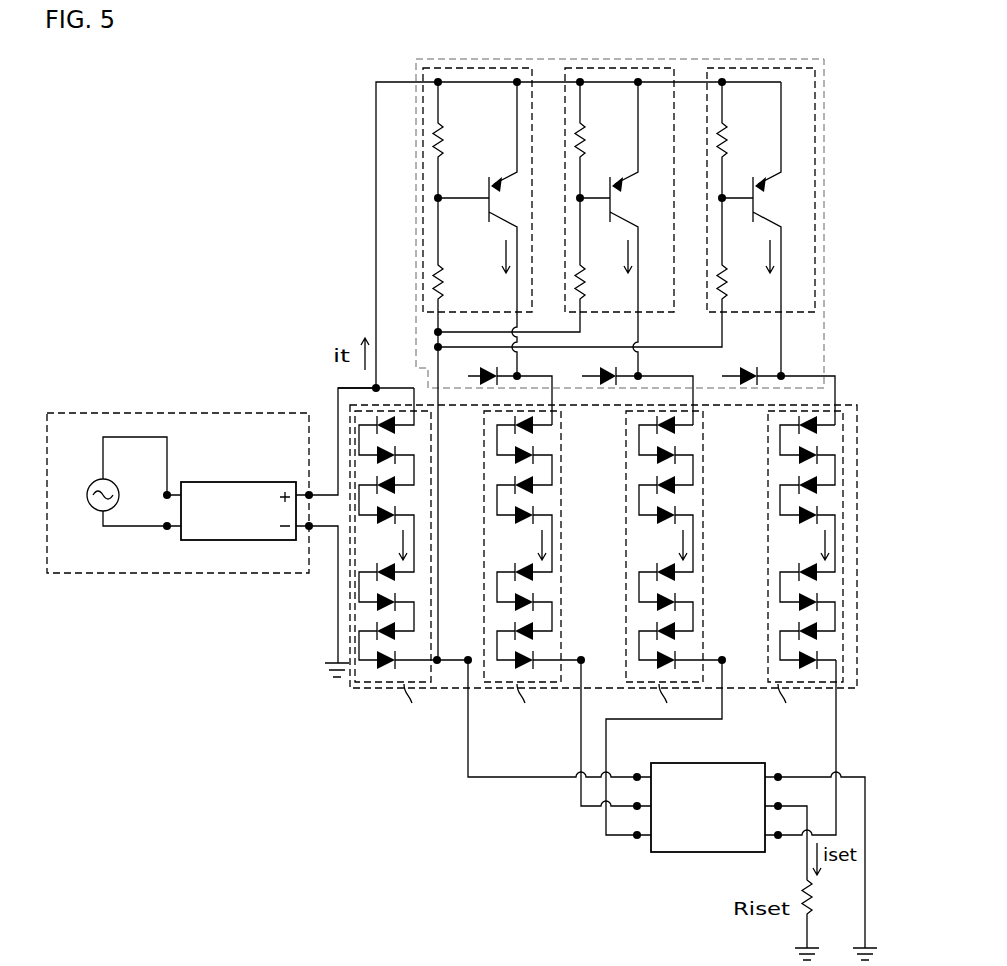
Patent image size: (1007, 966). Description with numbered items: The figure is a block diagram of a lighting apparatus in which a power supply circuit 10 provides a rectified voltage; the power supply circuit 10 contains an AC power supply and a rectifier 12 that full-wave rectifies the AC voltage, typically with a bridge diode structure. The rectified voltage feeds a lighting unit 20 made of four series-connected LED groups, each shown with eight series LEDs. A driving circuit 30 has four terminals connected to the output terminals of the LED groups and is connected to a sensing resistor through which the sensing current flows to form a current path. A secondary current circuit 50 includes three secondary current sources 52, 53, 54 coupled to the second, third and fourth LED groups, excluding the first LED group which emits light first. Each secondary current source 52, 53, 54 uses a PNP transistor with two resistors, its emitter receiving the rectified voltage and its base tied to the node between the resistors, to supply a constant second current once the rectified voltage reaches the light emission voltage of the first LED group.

The power supply circuit 10 is at (98, 573).
The rectifier 12 is at (240, 482).
The lighting unit 20 is at (380, 688).
The driving circuit 30 is at (705, 853).
The secondary current circuit 50 is at (416, 258).
The secondary current source 52 is at (530, 297).
The secondary current source 53 is at (612, 313).
The secondary current source 54 is at (753, 313).